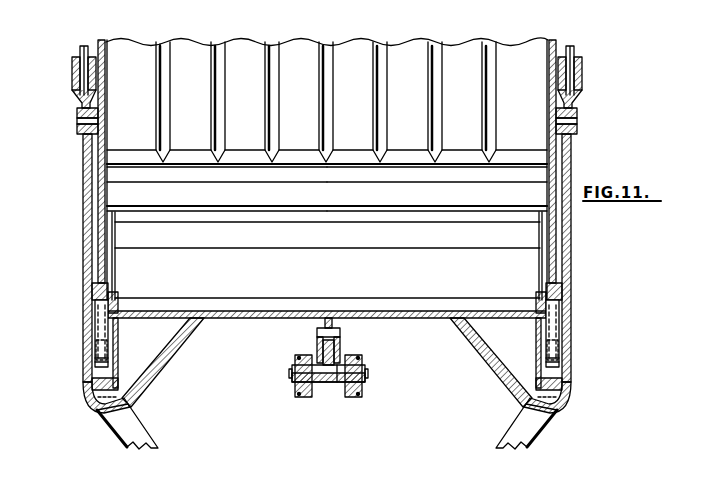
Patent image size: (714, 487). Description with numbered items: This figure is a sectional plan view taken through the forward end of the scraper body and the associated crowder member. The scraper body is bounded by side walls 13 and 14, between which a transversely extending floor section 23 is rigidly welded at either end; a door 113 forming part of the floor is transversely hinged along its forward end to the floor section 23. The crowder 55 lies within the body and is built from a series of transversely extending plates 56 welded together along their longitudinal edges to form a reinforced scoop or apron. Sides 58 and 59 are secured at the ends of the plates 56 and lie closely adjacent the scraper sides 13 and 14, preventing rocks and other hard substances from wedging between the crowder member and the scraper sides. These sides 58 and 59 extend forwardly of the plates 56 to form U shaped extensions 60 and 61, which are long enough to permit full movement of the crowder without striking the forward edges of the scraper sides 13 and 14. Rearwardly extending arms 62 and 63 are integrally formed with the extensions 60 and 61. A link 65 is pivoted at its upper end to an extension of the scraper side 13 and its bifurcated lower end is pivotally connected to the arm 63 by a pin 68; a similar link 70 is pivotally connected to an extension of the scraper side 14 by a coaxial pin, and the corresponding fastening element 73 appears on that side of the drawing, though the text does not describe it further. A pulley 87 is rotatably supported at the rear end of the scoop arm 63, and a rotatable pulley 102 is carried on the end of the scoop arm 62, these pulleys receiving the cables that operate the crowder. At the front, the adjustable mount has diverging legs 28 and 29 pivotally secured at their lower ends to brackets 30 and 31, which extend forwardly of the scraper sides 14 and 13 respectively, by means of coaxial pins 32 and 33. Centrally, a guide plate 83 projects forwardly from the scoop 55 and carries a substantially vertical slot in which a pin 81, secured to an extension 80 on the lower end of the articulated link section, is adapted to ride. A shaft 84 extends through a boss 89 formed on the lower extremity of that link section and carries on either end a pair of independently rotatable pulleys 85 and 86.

The door 113 is at (415, 24).
The side wall 13 is at (109, 201).
The side wall 14 is at (545, 197).
The floor section 23 is at (245, 204).
The crowder 55 is at (388, 237).
The side of crowder 58 is at (540, 265).
The side of crowder 59 is at (116, 272).
The rearwardly extending arm 62 is at (572, 247).
The rearwardly extending arm 63 is at (82, 258).
The pulley 87 is at (79, 56).
The link 65 is at (78, 110).
The pin 68 is at (78, 124).
The pulley 102 is at (576, 51).
The link 70 is at (578, 112).
The washer 73 is at (578, 123).
The plates 56 is at (262, 245).
The U shaped extension 61 is at (88, 396).
The bracket 31 is at (103, 322).
The pin 33 is at (104, 347).
The leg 29 is at (144, 436).
The U shaped extension 60 is at (551, 384).
The bracket 30 is at (555, 327).
The pin 32 is at (562, 343).
The leg 28 is at (542, 426).
The guide plate 83 is at (343, 333).
The pin 81 is at (316, 335).
The extension 80 is at (340, 348).
The shaft 84 is at (326, 383).
The boss 89 is at (338, 383).
The pulley 85 is at (297, 386).
The pulley 86 is at (361, 386).